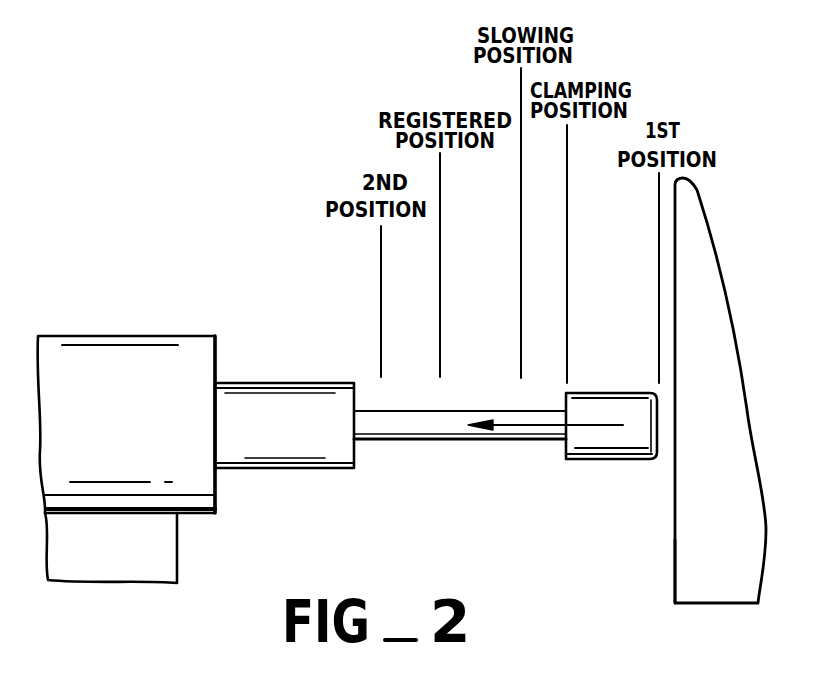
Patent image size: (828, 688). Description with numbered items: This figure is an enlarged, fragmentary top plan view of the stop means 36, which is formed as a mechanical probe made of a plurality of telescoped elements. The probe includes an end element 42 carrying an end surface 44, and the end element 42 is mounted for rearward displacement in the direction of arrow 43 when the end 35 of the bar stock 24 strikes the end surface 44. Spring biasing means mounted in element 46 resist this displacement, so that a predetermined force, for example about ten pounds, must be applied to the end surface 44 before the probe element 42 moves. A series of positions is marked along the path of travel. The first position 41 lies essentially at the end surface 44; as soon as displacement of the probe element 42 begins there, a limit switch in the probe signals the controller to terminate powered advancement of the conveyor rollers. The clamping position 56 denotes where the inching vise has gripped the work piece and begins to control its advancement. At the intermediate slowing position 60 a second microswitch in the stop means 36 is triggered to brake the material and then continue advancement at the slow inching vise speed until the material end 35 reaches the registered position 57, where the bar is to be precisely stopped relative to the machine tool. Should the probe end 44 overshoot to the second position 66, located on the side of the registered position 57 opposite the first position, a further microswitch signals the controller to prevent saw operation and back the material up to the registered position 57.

The bar stock 24 is at (723, 603).
The end of bar stock 35 is at (672, 558).
The stop means 36 is at (137, 312).
The first position 41 is at (658, 204).
The end element 42 is at (468, 442).
The arrow 43 is at (533, 427).
The end surface 44 is at (657, 445).
The element 46 is at (333, 470).
The clamping position 56 is at (567, 252).
The registered position 57 is at (441, 258).
The slowing position 60 is at (520, 300).
The second position 66 is at (381, 305).